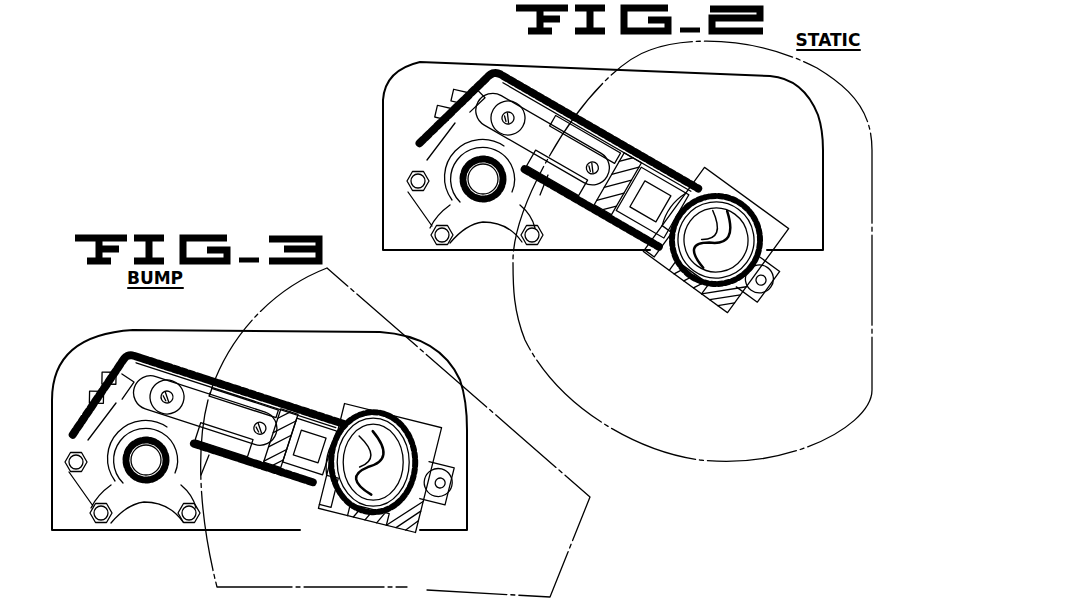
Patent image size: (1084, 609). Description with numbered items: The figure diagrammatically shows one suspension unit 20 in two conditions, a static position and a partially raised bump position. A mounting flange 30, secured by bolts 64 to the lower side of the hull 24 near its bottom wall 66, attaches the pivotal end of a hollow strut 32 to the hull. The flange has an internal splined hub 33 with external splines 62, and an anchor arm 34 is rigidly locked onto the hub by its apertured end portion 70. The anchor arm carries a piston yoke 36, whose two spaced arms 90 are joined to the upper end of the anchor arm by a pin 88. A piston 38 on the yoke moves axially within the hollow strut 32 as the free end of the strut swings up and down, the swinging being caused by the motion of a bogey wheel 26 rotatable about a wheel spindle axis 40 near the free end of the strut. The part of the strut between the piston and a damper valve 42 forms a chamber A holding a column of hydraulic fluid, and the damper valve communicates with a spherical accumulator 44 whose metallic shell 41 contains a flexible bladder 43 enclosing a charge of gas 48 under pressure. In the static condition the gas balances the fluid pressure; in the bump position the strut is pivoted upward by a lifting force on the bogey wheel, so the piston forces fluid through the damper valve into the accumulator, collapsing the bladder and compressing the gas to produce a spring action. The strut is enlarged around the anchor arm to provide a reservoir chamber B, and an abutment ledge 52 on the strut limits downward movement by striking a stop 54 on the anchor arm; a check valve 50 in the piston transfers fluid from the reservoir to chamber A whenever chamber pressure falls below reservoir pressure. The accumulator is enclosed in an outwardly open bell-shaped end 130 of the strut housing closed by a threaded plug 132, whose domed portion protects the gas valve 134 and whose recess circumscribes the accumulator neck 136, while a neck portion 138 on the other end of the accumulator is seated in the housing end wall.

In FIG. 2, the suspension unit 20 is at (605, 233).
In FIG. 3, the suspension unit 20 is at (274, 505).
In FIG. 2, the hull 24 is at (718, 104).
In FIG. 3, the hull 24 is at (324, 356).
In FIG. 2, the bogey wheel 26 is at (876, 405).
In FIG. 3, the bogey wheel 26 is at (595, 508).
In FIG. 2, the mounting flange 30 is at (440, 220).
In FIG. 3, the mounting flange 30 is at (92, 516).
In FIG. 2, the hollow strut 32 is at (537, 92).
In FIG. 3, the hollow strut 32 is at (183, 355).
In FIG. 2, the hub 33 is at (486, 206).
In FIG. 3, the hub 33 is at (148, 486).
In FIG. 2, the anchor arm 34 is at (492, 78).
In FIG. 3, the anchor arm 34 is at (155, 353).
In FIG. 2, the piston yoke 36 is at (581, 127).
In FIG. 3, the piston yoke 36 is at (250, 397).
In FIG. 2, the piston 38 is at (626, 160).
In FIG. 3, the piston 38 is at (292, 405).
In FIG. 2, the wheel spindle axis 40 is at (752, 218).
In FIG. 3, the wheel spindle axis 40 is at (410, 423).
In FIG. 2, the metallic shell 41 is at (746, 203).
In FIG. 3, the metallic shell 41 is at (418, 447).
In FIG. 2, the damper valve 42 is at (674, 195).
In FIG. 3, the damper valve 42 is at (331, 430).
In FIG. 2, the flexible bladder 43 is at (675, 280).
In FIG. 3, the flexible bladder 43 is at (345, 513).
In FIG. 2, the spherical accumulator 44 is at (712, 284).
In FIG. 3, the spherical accumulator 44 is at (385, 528).
In FIG. 2, the charge of gas 48 is at (720, 196).
In FIG. 3, the charge of gas 48 is at (382, 415).
In FIG. 2, the check valve 50 is at (590, 210).
In FIG. 3, the check valve 50 is at (265, 470).
In FIG. 2, the abutment ledge 52 is at (418, 133).
In FIG. 3, the abutment ledge 52 is at (78, 412).
In FIG. 2, the stop 54 is at (443, 120).
In FIG. 3, the stop 54 is at (75, 395).
In FIG. 2, the external splines 62 is at (483, 163).
In FIG. 3, the external splines 62 is at (146, 437).
In FIG. 2, the bolts 64 is at (404, 180).
In FIG. 3, the bolts 64 is at (190, 522).
In FIG. 2, the bottom wall 66 is at (808, 250).
In FIG. 3, the bottom wall 66 is at (230, 528).
In FIG. 2, the apertured end portion 70 is at (420, 166).
In FIG. 3, the apertured end portion 70 is at (78, 470).
In FIG. 2, the pin 88 is at (512, 112).
In FIG. 3, the pin 88 is at (171, 390).
In FIG. 2, the yoke arms 90 is at (546, 125).
In FIG. 3, the yoke arms 90 is at (216, 400).
In FIG. 2, the bell-shaped end 130 is at (695, 290).
In FIG. 3, the bell-shaped end 130 is at (367, 526).
In FIG. 2, the threaded plug 132 is at (745, 305).
In FIG. 3, the threaded plug 132 is at (433, 523).
In FIG. 2, the gas valve 134 is at (778, 278).
In FIG. 3, the gas valve 134 is at (441, 478).
In FIG. 2, the accumulator neck 136 is at (770, 290).
In FIG. 3, the accumulator neck 136 is at (426, 500).
In FIG. 2, the neck portion 138 is at (660, 240).
In FIG. 3, the neck portion 138 is at (333, 471).
In FIG. 2, the chamber A is at (664, 180).
In FIG. 3, the chamber A is at (263, 500).
In FIG. 2, the reservoir chamber B is at (468, 104).
In FIG. 3, the reservoir chamber B is at (110, 378).